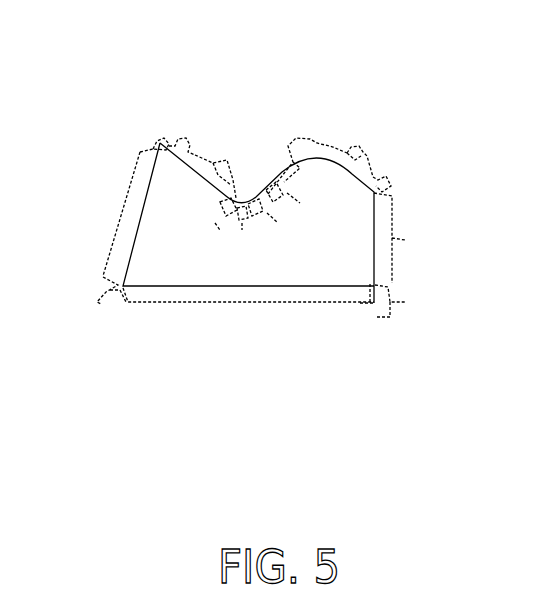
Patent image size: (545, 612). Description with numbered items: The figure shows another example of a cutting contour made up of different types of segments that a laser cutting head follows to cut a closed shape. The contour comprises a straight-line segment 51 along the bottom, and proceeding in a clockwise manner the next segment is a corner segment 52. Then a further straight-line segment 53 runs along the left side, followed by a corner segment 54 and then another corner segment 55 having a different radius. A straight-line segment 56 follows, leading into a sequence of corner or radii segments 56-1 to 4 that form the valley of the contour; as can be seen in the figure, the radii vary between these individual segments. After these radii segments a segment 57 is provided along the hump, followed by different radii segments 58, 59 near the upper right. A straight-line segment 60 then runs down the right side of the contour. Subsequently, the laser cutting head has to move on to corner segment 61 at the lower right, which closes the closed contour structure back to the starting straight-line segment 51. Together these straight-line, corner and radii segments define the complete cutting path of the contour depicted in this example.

The straight-line segment 51 is at (250, 303).
The corner segment 52 is at (100, 303).
The straight-line segment 53 is at (122, 212).
The corner segment 54 is at (160, 142).
The corner segment 55 is at (188, 140).
The straight-line segment 56 is at (228, 160).
The radii segments 56-1 to 4 is at (263, 217).
The segment 57 is at (302, 147).
The radii segment 58 is at (360, 147).
The radii segment 59 is at (385, 182).
The straight-line segment 60 is at (405, 240).
The corner segment 61 is at (405, 302).